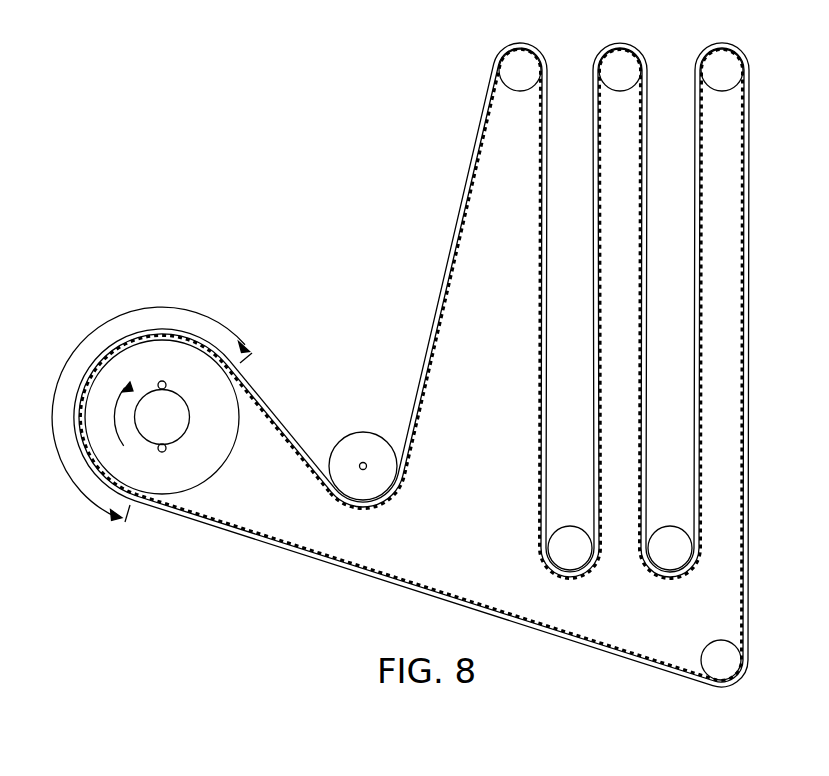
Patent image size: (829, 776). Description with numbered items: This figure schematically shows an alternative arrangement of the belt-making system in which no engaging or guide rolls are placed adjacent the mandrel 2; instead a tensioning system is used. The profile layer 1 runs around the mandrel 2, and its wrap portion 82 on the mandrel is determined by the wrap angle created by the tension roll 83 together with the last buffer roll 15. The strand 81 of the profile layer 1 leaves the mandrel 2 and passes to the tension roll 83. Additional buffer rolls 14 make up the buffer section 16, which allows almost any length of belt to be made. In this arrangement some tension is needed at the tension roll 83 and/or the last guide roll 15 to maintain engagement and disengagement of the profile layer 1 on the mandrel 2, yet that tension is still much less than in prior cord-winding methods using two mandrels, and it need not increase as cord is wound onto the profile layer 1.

The profile layer 1 is at (411, 365).
The mandrel 2 is at (228, 400).
The buffer rolls 14 is at (515, 62).
The last buffer roll 15 is at (712, 655).
The buffer section 16 is at (662, 38).
The belt strand 81 is at (278, 412).
The wrap portion 82 is at (70, 358).
The tension roll 83 is at (373, 485).